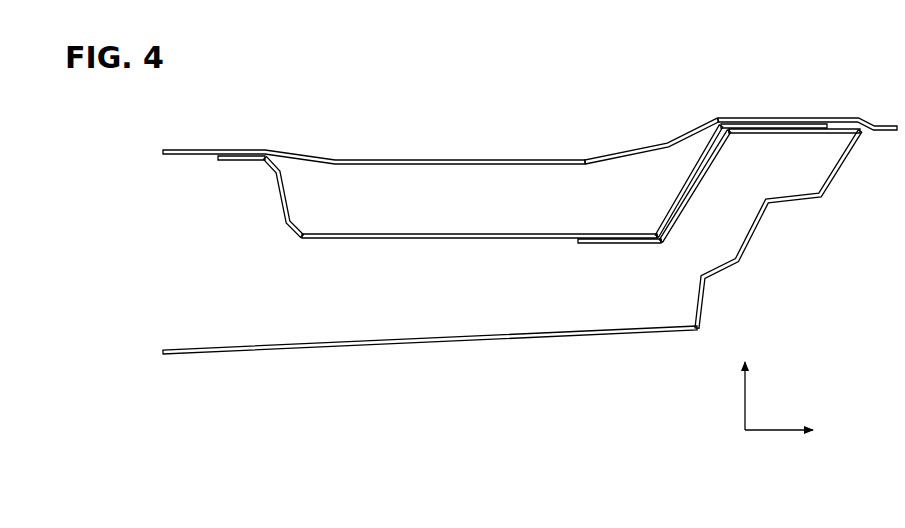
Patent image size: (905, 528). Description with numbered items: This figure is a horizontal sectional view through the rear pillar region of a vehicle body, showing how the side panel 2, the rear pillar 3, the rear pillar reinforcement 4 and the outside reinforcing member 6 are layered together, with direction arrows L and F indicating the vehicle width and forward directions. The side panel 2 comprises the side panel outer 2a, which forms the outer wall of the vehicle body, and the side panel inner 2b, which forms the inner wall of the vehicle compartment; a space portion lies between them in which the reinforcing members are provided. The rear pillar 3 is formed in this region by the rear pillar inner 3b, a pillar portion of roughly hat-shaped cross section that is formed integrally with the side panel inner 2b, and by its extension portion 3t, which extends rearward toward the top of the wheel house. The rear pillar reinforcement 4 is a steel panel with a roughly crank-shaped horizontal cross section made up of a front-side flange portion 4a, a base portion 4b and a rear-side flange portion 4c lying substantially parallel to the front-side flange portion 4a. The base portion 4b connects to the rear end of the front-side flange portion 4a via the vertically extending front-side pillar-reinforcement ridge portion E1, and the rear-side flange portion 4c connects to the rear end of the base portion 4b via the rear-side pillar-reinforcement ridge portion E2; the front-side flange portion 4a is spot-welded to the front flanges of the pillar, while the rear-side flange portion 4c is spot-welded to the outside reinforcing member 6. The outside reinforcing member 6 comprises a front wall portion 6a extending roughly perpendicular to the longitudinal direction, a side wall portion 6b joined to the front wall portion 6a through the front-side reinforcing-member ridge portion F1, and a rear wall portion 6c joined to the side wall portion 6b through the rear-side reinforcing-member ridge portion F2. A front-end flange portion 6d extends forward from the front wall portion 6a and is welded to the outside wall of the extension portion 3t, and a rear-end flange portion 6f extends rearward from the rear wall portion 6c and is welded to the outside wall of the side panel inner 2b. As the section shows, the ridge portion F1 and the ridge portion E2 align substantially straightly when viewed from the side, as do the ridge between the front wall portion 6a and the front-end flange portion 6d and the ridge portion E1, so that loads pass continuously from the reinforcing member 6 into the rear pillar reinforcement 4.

The side panel 2 is at (122, 226).
The side panel outer 2a is at (185, 347).
The side panel inner 2b is at (191, 155).
The rear pillar 3 is at (846, 116).
The extension portion 3t is at (652, 114).
The rear pillar inner 3b is at (668, 143).
The outside reinforcing member 6 is at (410, 241).
The front wall portion 6a is at (689, 174).
The side wall portion 6b is at (500, 233).
The rear wall portion 6c is at (281, 200).
The front-end flange portion 6d is at (757, 123).
The rear-end flange portion 6f is at (223, 161).
The rear pillar reinforcement 4 is at (706, 190).
The front-side flange portion 4a is at (806, 134).
The base portion 4b is at (676, 224).
The rear-side flange portion 4c is at (603, 244).
The front-side pillar-reinforcement ridge portion E1 is at (733, 130).
The rear-side pillar-reinforcement ridge portion E2 is at (662, 245).
The front-side reinforcing-member ridge portion F1 is at (659, 235).
The rear-side reinforcing-member ridge portion F2 is at (303, 234).
The upward direction L is at (745, 402).
The forward direction F is at (775, 432).